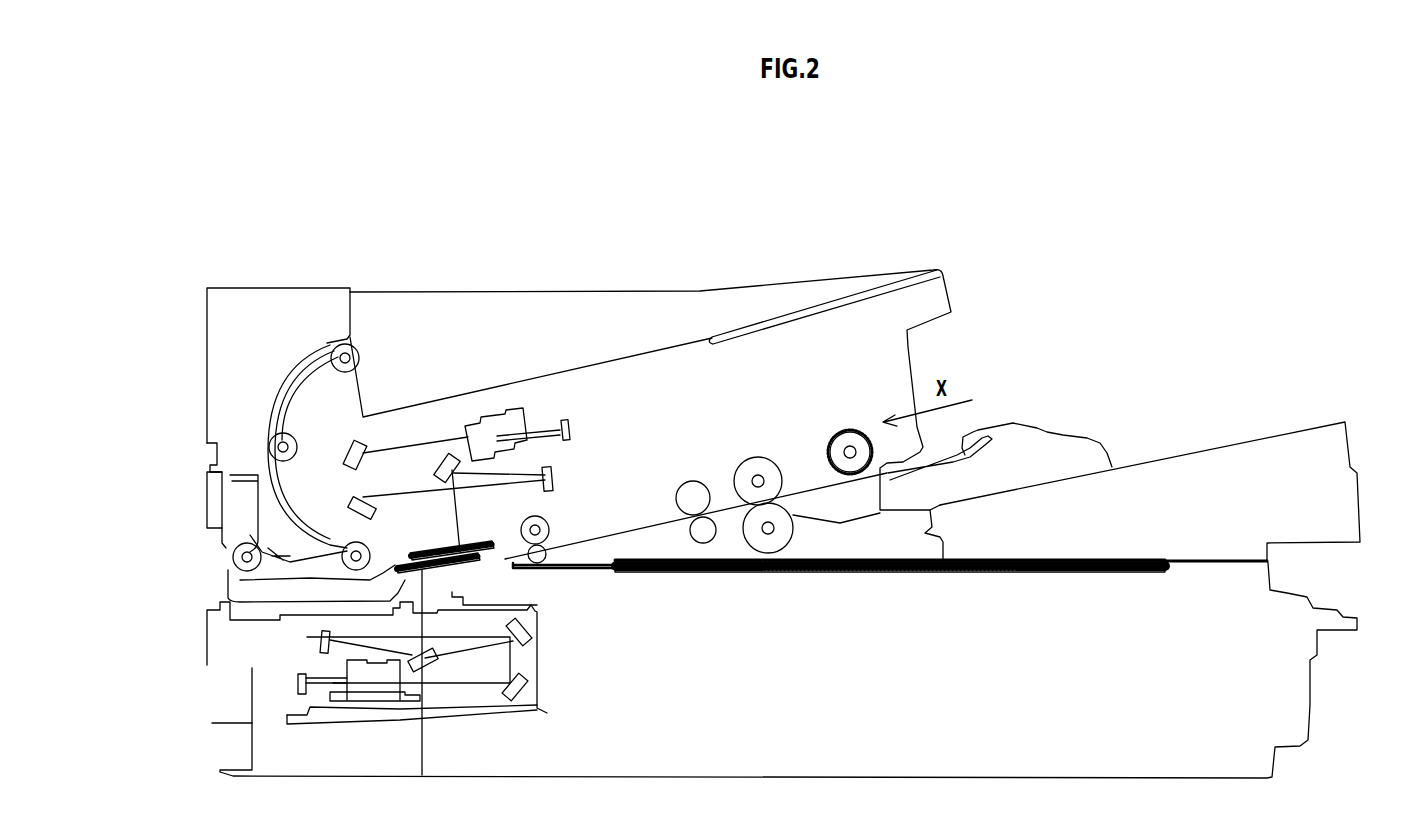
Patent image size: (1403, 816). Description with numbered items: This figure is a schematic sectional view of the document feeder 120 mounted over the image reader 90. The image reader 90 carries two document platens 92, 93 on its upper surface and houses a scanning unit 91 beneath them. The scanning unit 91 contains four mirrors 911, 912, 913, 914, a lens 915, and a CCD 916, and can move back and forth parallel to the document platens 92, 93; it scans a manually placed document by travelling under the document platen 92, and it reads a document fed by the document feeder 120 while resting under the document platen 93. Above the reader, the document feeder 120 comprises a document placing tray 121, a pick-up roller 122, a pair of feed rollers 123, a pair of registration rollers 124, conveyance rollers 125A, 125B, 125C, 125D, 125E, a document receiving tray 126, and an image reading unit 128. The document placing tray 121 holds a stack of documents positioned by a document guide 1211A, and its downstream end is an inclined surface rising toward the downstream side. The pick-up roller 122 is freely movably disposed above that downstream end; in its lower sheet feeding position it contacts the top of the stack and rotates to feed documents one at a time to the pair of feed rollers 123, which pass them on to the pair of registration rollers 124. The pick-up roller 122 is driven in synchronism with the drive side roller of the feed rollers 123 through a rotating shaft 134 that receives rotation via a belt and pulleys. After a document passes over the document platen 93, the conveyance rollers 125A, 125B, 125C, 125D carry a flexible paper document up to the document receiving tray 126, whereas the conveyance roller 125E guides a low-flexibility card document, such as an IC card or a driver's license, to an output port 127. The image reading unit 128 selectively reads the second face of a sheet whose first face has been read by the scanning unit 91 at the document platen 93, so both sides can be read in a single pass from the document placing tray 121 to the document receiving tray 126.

The image reader 90 is at (1308, 723).
The scanning unit 91 is at (540, 707).
The mirror 911 is at (428, 666).
The mirror 912 is at (312, 638).
The mirror 913 is at (540, 631).
The mirror 914 is at (508, 697).
The lens 915 is at (372, 693).
The CCD 916 is at (298, 682).
The document platen 92 is at (1000, 573).
The document platen 93 is at (487, 560).
The document feeder 120 is at (207, 287).
The document placing tray 121 is at (1272, 441).
The document guide 1211A is at (1055, 446).
The pick-up roller 122 is at (836, 446).
The pair of feed rollers 123 is at (738, 463).
The pair of registration rollers 124 is at (679, 487).
The conveyance roller 125A is at (548, 521).
The conveyance roller 125B is at (370, 550).
The conveyance roller 125C is at (282, 433).
The conveyance roller 125D is at (360, 357).
The conveyance roller 125E is at (238, 555).
The document receiving tray 126 is at (627, 352).
The output port 127 is at (226, 588).
The image reading unit 128 is at (570, 407).
The rotating shaft 134 is at (757, 475).